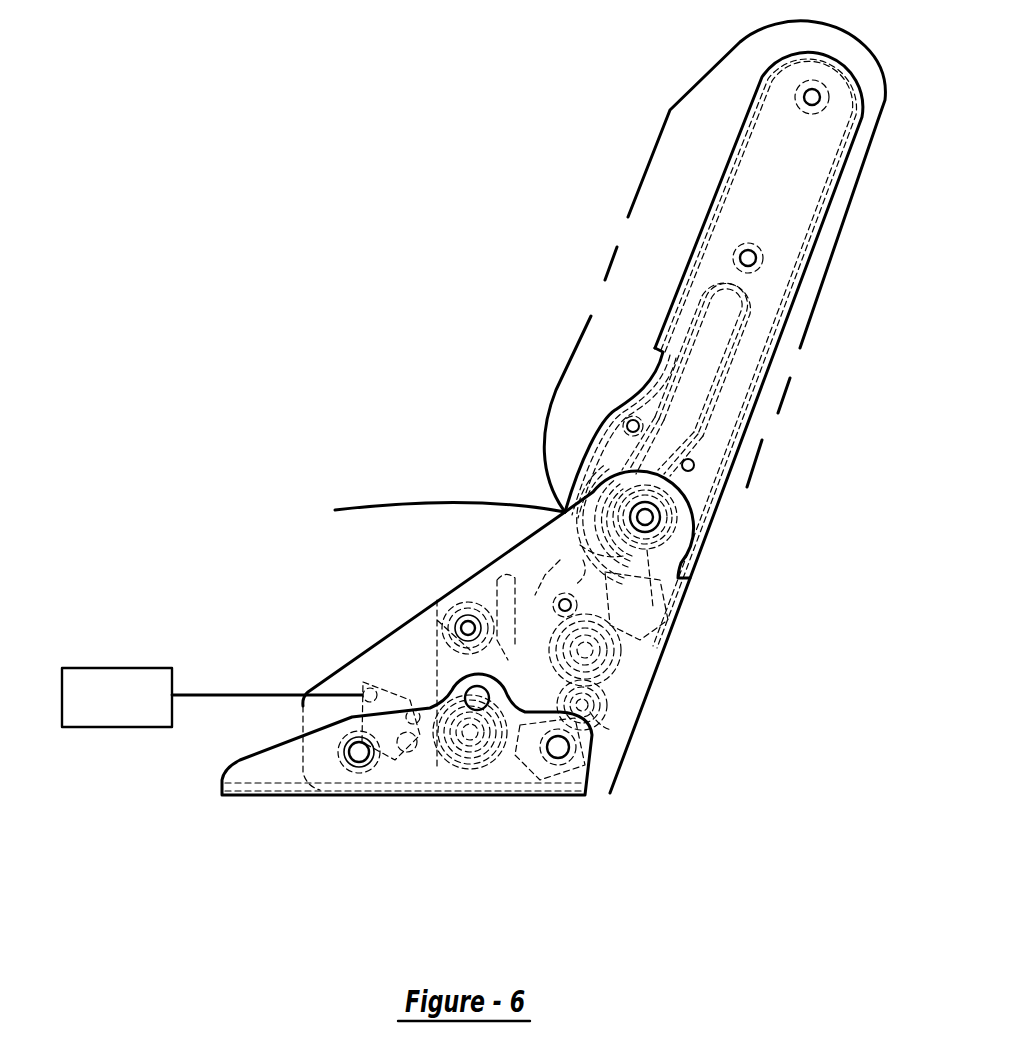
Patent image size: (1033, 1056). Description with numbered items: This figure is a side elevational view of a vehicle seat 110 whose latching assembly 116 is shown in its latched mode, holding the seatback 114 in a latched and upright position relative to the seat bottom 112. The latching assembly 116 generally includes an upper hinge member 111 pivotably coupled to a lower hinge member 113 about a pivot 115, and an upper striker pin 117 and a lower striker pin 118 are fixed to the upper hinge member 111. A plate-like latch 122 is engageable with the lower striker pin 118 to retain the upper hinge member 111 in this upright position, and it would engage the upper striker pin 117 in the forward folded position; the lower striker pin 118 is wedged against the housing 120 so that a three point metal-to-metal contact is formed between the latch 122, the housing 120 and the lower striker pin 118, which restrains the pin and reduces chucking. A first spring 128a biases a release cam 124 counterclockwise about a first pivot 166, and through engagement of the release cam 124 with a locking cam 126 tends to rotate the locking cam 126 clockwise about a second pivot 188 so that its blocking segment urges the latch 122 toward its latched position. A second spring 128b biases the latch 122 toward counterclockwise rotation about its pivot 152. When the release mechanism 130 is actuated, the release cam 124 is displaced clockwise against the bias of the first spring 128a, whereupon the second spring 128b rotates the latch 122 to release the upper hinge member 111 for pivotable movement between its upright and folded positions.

The vehicle seat 110 is at (488, 317).
The upper hinge member 111 is at (783, 228).
The seat bottom 112 is at (355, 510).
The lower hinge member 113 is at (320, 712).
The seatback 114 is at (646, 174).
The pivot 115 is at (648, 517).
The latching assembly 116 is at (504, 578).
The upper striker pin 117 is at (627, 427).
The lower striker pin 118 is at (585, 650).
The housing 120 is at (438, 658).
The latch 122 is at (623, 598).
The release cam 124 is at (510, 718).
The locking cam 126 is at (598, 722).
The first spring 128a is at (433, 753).
The second spring 128b is at (493, 602).
The release mechanism 130 is at (125, 667).
The pivot 152 is at (568, 604).
The first pivot 166 is at (470, 737).
The second pivot 188 is at (583, 707).